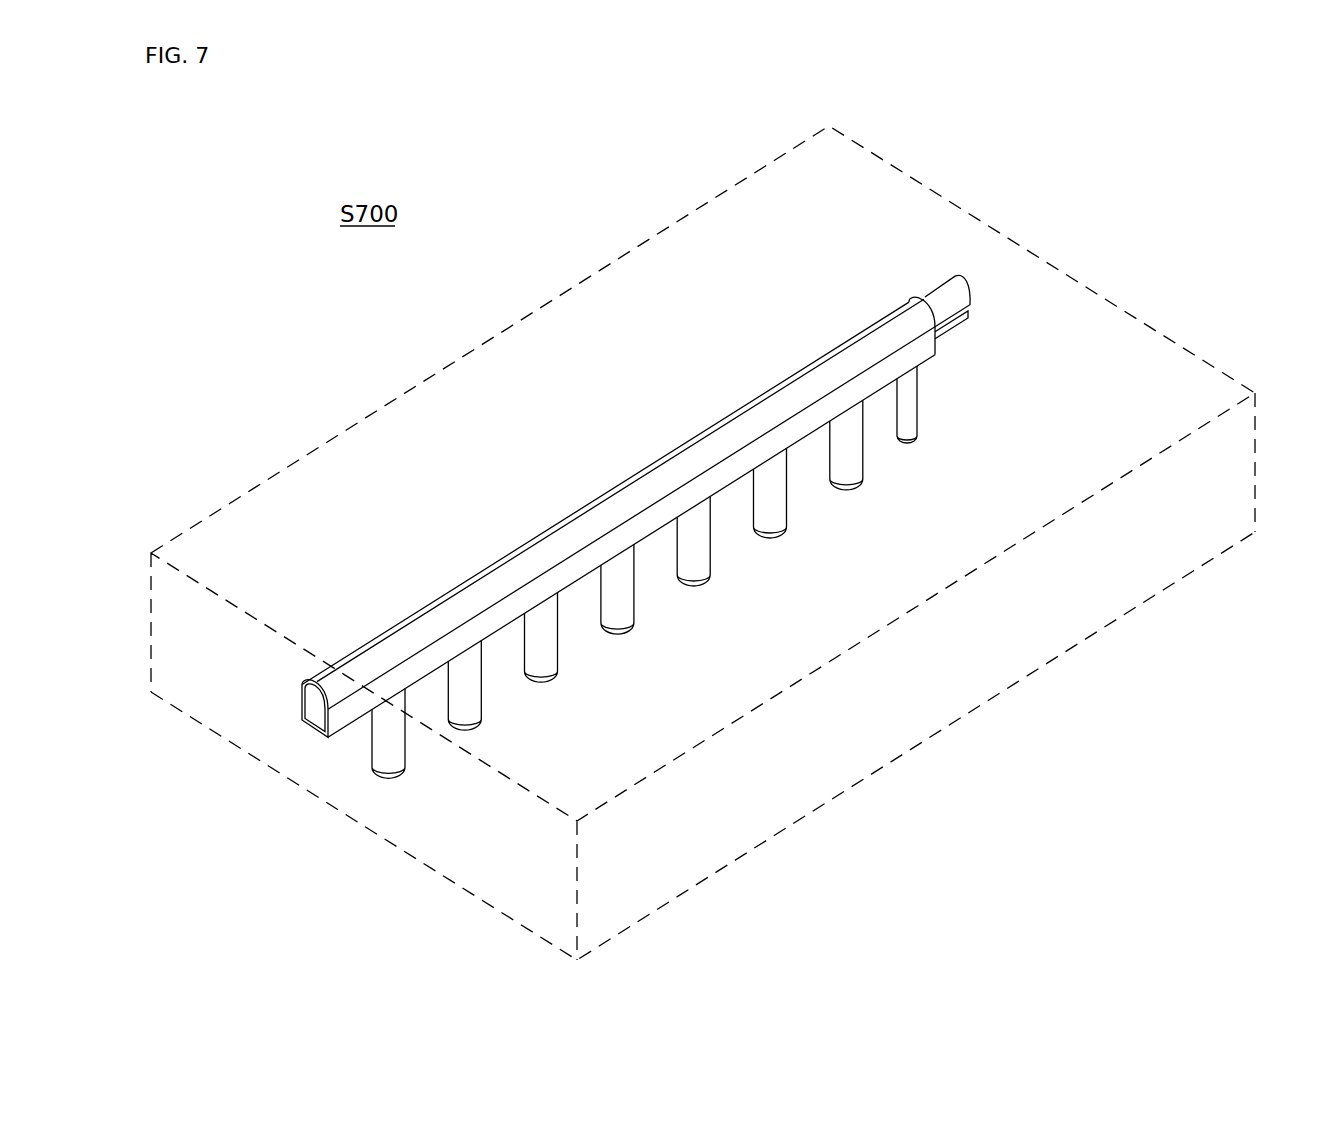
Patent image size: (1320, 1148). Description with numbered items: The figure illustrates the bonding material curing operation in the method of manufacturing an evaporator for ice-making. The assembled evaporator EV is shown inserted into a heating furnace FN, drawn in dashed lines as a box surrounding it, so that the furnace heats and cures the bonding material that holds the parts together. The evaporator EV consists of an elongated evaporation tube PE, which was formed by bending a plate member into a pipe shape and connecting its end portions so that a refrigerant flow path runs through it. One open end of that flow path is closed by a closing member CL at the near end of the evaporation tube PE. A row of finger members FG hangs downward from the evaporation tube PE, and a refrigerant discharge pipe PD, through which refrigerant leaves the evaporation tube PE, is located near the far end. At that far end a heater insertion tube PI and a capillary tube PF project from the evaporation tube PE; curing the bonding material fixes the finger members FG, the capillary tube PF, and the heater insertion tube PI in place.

The heating furnace FN is at (657, 237).
The evaporator for ice-making EV is at (599, 532).
The evaporation tube PE is at (572, 517).
The closing member CL is at (303, 703).
The heater insertion tube PI is at (940, 287).
The capillary tube PF is at (960, 330).
The refrigerant discharge pipe PD is at (912, 420).
The finger member FG is at (408, 755).